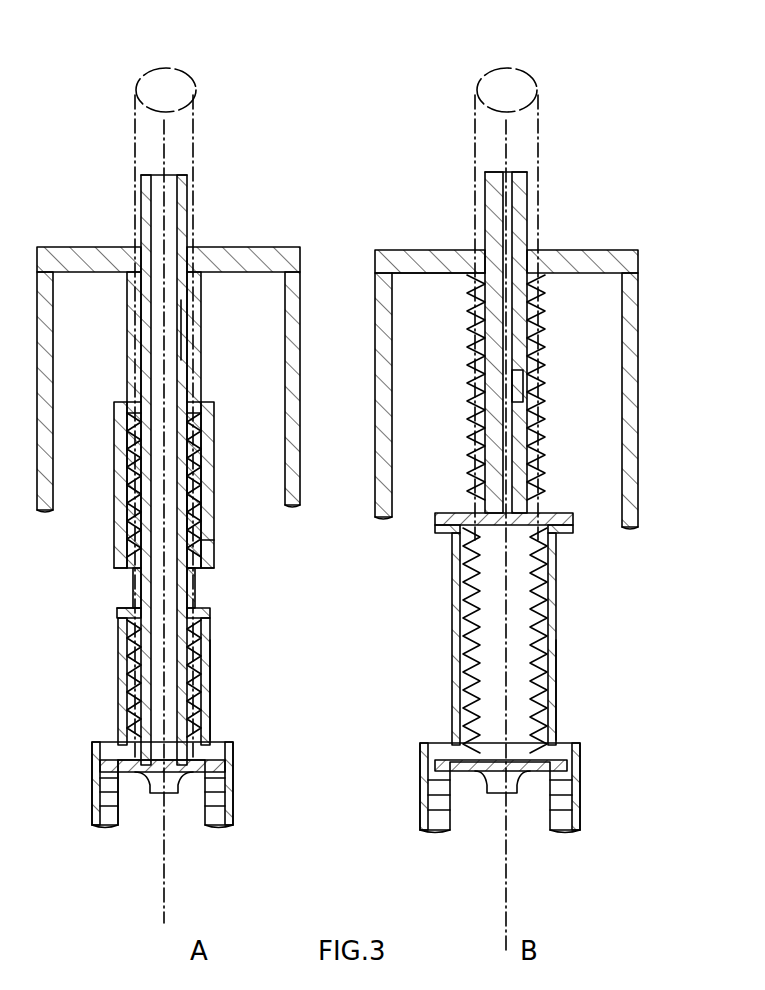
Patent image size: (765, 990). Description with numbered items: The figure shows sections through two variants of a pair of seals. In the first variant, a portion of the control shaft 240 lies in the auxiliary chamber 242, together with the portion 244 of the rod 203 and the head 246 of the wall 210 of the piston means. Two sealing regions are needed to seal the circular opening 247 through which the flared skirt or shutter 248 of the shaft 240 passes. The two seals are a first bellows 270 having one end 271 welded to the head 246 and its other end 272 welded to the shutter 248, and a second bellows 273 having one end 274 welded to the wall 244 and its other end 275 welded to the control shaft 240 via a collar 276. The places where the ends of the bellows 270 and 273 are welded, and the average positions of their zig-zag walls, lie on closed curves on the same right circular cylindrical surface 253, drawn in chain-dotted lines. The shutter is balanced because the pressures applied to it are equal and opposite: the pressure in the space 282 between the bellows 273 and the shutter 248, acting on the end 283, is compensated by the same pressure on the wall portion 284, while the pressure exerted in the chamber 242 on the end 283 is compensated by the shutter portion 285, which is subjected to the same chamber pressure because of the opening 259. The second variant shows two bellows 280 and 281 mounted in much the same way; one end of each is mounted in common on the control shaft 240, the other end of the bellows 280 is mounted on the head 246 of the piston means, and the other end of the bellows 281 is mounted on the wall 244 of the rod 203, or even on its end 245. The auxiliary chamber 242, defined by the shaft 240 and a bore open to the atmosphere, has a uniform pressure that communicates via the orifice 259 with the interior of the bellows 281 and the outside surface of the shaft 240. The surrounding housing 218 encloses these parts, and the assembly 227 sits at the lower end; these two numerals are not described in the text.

In FIG. 3A, the right circular cylindrical surface 253 is at (136, 100).
In FIG. 3B, the right circular cylindrical surface 253 is at (540, 105).
In FIG. 3A, the control shaft 240 is at (143, 205).
In FIG. 3B, the control shaft 240 is at (520, 215).
In FIG. 3A, the auxiliary chamber 242 is at (130, 330).
In FIG. 3B, the auxiliary chamber 242 is at (520, 603).
In FIG. 3A, the opening 259 is at (183, 332).
In FIG. 3B, the opening 259 is at (520, 380).
In FIG. 3A, the end 283 is at (135, 403).
In FIG. 3A, the other end of second bellows 275 is at (130, 418).
In FIG. 3A, the collar 276 is at (195, 408).
In FIG. 3A, the housing 218 is at (108, 483).
In FIG. 3B, the housing 218 is at (452, 483).
In FIG. 3A, the rod 203 is at (378, 450).
In FIG. 3A, the second bellows 273 is at (118, 505).
In FIG. 3A, the space 282 is at (190, 520).
In FIG. 3A, the portion of the rod 244 is at (208, 548).
In FIG. 3B, the portion of the rod 244 is at (540, 272).
In FIG. 3A, the one end of second bellows 274 is at (128, 560).
In FIG. 3A, the wall portion 284 is at (190, 606).
In FIG. 3A, the other end of first bellows 272 is at (130, 620).
In FIG. 3A, the shutter portion 285 is at (125, 640).
In FIG. 3A, the flared skirt or shutter 248 is at (205, 645).
In FIG. 3B, the flared skirt or shutter 248 is at (553, 655).
In FIG. 3A, the first bellows 270 is at (125, 680).
In FIG. 3A, the circular opening 247 is at (218, 715).
In FIG. 3A, the one end of first bellows 271 is at (100, 768).
In FIG. 3A, the cap 227 is at (92, 826).
In FIG. 3B, the cap 227 is at (420, 831).
In FIG. 3A, the wall of the piston means 210 is at (118, 822).
In FIG. 3A, the head 246 is at (175, 795).
In FIG. 3B, the head 246 is at (517, 775).
In FIG. 3B, the end of the rod 245 is at (438, 258).
In FIG. 3B, the bellows 281 is at (540, 410).
In FIG. 3B, the bellows 280 is at (550, 700).